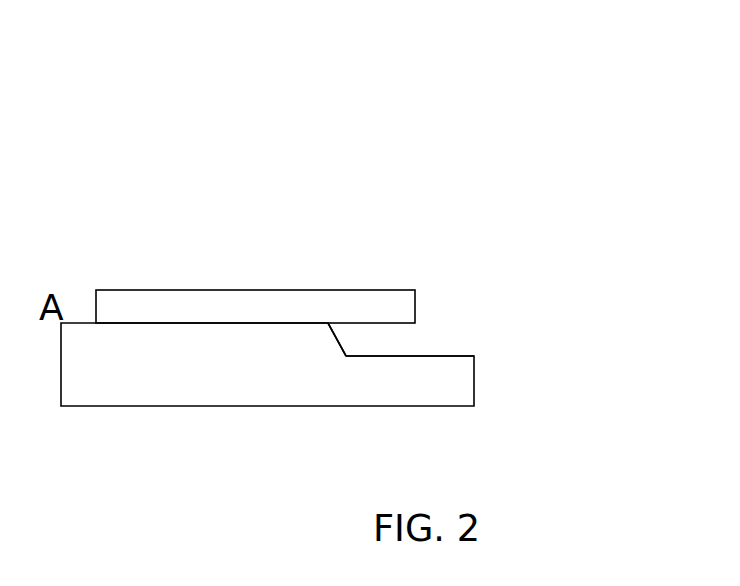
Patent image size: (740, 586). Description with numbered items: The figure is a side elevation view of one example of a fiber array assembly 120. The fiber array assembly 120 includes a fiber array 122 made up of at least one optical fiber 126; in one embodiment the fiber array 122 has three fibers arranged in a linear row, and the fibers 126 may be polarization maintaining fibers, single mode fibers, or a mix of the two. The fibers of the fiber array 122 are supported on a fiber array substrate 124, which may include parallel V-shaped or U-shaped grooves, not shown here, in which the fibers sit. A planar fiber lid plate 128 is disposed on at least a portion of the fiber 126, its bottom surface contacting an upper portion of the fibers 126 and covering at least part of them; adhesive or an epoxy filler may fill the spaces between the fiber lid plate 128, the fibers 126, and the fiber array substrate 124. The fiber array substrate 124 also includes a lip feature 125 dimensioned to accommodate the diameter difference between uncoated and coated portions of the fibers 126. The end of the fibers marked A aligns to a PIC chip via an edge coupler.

The fiber array assembly 120 is at (88, 88).
The fiber array 122 is at (645, 318).
The fiber array substrate 124 is at (226, 393).
The lip feature 125 is at (341, 339).
The optical fiber 126 is at (428, 342).
The fiber lid plate 128 is at (144, 309).